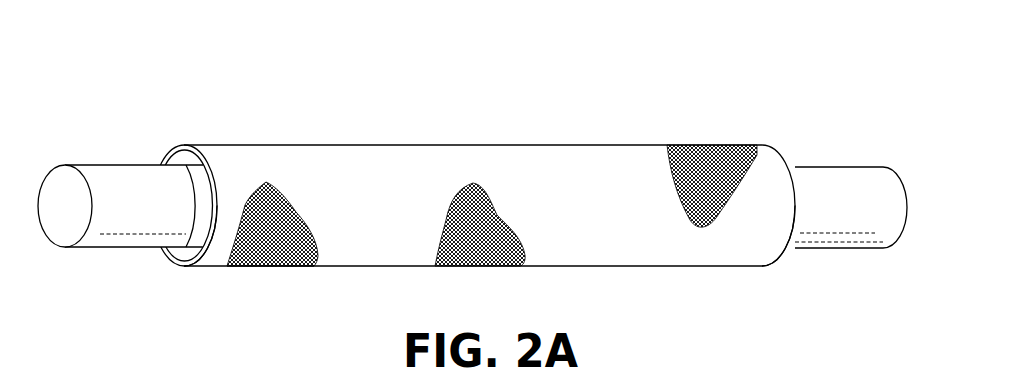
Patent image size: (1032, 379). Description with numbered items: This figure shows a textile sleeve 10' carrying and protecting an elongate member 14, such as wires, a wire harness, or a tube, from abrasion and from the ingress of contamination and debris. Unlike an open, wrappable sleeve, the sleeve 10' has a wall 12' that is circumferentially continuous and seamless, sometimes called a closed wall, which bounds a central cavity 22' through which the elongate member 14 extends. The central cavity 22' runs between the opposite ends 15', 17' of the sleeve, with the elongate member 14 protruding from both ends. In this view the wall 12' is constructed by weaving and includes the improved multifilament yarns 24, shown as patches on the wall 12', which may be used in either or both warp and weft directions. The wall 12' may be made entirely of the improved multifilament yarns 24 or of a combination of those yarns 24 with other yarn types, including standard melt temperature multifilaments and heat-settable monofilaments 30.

The textile sleeve 10' is at (589, 40).
The wall 12' is at (473, 231).
The elongate member 14 is at (845, 185).
The end 15' is at (202, 274).
The end 17' is at (806, 265).
The central cavity 22' is at (120, 237).
The improved multifilament yarns 24 is at (478, 210).
The heat-settable monofilaments 30 is at (297, 212).